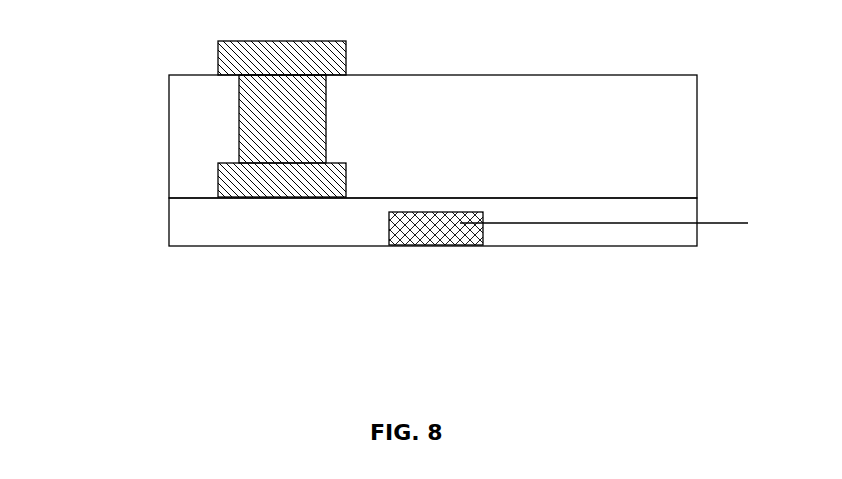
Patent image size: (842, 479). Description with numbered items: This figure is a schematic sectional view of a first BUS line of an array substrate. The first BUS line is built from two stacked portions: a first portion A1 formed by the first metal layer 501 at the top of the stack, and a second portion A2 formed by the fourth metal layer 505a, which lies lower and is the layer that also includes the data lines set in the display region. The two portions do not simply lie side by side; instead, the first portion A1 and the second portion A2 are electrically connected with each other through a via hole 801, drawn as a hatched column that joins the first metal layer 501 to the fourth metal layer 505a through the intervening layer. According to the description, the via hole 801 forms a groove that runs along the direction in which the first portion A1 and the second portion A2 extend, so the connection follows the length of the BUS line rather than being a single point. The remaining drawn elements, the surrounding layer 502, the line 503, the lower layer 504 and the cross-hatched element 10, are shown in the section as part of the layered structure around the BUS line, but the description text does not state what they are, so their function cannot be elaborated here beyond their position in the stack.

The first metal layer 501 is at (215, 58).
The insulating layer 502 is at (196, 127).
The conductive line 503 is at (628, 211).
The substrate 504 is at (188, 224).
The fourth metal layer 505a is at (287, 178).
The via hole 801 is at (262, 145).
The thin film transistor region 10 is at (417, 228).
The first portion A1 is at (278, 15).
The second portion A2 is at (366, 179).